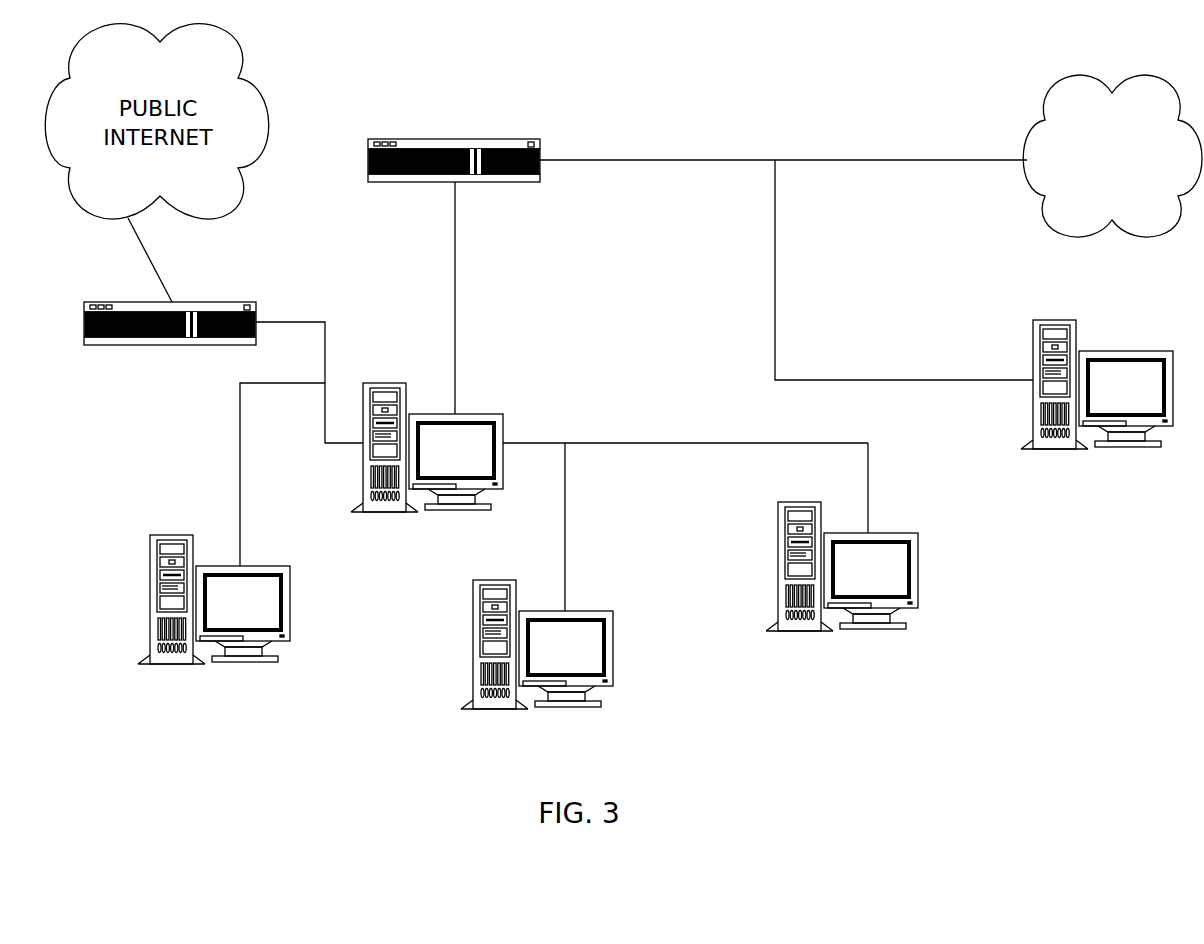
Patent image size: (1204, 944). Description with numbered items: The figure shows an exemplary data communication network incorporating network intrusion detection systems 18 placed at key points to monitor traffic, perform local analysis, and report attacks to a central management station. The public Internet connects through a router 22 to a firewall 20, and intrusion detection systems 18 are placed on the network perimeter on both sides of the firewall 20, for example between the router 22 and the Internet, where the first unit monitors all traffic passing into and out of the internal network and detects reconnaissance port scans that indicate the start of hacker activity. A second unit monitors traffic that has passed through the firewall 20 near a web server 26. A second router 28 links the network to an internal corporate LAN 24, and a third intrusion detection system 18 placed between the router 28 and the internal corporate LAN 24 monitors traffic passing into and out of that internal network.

The network intrusion detection system 18 is at (260, 566).
The firewall 20 is at (473, 414).
The router 22 is at (201, 302).
The internal corporate LAN 24 is at (1088, 75).
The web server 26 is at (916, 560).
The router 28 is at (455, 139).